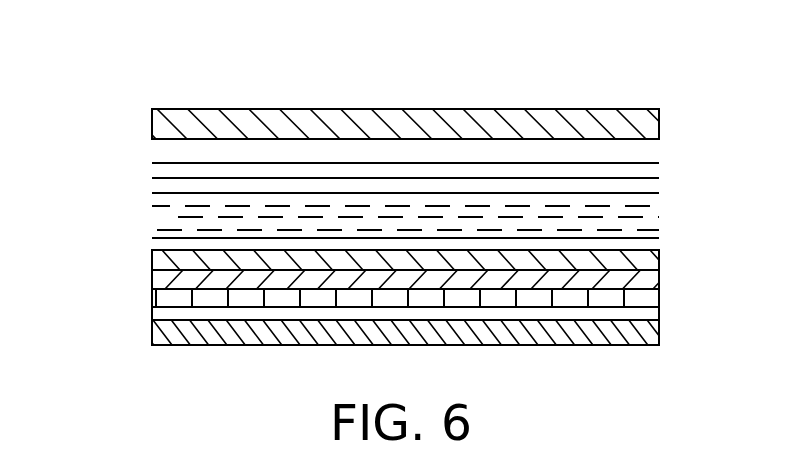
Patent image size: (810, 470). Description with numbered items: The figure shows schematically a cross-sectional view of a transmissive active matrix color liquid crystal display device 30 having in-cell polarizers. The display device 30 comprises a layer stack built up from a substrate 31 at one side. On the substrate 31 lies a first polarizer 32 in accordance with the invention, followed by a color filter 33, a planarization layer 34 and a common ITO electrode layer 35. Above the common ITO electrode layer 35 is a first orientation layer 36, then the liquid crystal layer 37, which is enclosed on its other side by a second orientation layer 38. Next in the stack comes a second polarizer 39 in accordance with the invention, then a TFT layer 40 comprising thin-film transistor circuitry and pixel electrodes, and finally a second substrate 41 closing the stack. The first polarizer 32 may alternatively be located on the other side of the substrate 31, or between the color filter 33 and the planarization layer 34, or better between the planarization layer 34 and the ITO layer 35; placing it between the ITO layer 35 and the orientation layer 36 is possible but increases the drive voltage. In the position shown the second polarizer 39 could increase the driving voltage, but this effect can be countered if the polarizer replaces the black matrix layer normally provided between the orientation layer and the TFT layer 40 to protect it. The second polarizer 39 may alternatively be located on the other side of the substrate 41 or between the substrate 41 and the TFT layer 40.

The display device 30 is at (62, 72).
The substrate 31 is at (638, 332).
The first polarizer 32 is at (638, 314).
The color filter 33 is at (638, 298).
The planarization layer 34 is at (638, 283).
The common ITO electrode layer 35 is at (638, 264).
The first orientation layer 36 is at (638, 247).
The liquid crystal layer 37 is at (173, 217).
The second orientation layer 38 is at (173, 186).
The second polarizer 39 is at (173, 171).
The TFT layer 40 is at (172, 155).
The substrate 41 is at (168, 125).